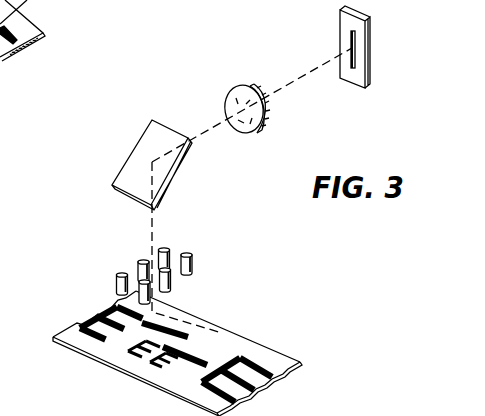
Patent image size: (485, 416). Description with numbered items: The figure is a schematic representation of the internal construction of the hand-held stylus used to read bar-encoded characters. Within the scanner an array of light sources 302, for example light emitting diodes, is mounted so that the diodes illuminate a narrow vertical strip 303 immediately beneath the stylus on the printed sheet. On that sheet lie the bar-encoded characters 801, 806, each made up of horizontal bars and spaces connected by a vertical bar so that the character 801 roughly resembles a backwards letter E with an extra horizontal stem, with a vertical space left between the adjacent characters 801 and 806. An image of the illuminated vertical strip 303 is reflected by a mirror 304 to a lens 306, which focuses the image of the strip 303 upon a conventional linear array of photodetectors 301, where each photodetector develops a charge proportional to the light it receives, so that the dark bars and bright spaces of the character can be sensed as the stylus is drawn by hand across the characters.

The linear array of photodetectors 301 is at (371, 72).
The lens 306 is at (234, 88).
The mirror 304 is at (131, 170).
The array of light sources 302 is at (200, 262).
The bar-encoded character 801 is at (255, 362).
The bar-encoded character 806 is at (217, 347).
The vertical strip 303 is at (126, 357).